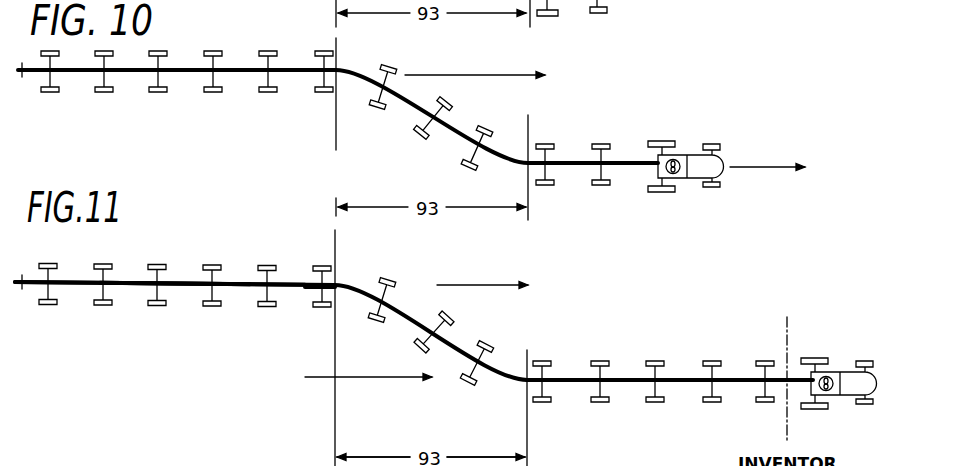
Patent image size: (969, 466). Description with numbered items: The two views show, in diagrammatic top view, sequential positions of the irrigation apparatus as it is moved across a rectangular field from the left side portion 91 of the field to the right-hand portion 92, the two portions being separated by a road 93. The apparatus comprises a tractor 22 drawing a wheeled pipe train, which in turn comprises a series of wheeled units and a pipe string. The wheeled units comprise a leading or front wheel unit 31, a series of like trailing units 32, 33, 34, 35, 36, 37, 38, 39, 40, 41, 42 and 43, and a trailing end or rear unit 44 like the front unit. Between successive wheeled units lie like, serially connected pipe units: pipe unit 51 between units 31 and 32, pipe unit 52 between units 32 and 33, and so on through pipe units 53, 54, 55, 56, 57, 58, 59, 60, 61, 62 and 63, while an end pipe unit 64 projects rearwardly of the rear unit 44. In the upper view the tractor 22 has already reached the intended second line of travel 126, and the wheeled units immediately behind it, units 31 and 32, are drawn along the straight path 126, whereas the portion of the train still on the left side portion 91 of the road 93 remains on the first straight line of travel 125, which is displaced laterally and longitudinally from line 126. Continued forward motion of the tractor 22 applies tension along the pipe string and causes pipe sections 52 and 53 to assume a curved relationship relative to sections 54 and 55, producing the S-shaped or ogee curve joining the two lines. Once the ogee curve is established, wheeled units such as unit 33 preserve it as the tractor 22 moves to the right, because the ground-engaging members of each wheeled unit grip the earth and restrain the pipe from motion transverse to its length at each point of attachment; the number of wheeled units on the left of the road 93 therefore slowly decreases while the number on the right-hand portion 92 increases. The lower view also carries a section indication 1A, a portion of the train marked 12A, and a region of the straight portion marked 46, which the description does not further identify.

In FIG. 11, the section line 1A is at (762, 442).
In FIG. 11, the track section 12A is at (746, 402).
In FIG. 11, the tractor 22 is at (850, 370).
In FIG. 10, the front wheel unit 31 is at (600, 143).
In FIG. 11, the front wheel unit 31 is at (767, 408).
In FIG. 10, the trailing wheeled unit 32 is at (547, 143).
In FIG. 11, the trailing wheeled unit 32 is at (717, 408).
In FIG. 10, the trailing wheeled unit 33 is at (488, 127).
In FIG. 11, the trailing wheeled unit 33 is at (660, 408).
In FIG. 10, the trailing wheeled unit 34 is at (448, 105).
In FIG. 11, the trailing wheeled unit 34 is at (607, 405).
In FIG. 11, the trailing wheeled unit 35 is at (545, 405).
In FIG. 11, the trailing wheeled unit 36 is at (468, 382).
In FIG. 11, the trailing wheeled unit 37 is at (419, 350).
In FIG. 11, the trailing wheeled unit 38 is at (377, 323).
In FIG. 11, the trailing wheeled unit 39 is at (325, 295).
In FIG. 11, the wheeled unit 40 is at (254, 285).
In FIG. 11, the trailing wheeled unit 41 is at (203, 287).
In FIG. 11, the trailing wheeled unit 42 is at (150, 284).
In FIG. 11, the trailing wheeled unit 43 is at (100, 305).
In FIG. 11, the rear wheeled unit 44 is at (52, 305).
In FIG. 11, the straight track section 46 is at (175, 326).
In FIG. 11, the pipe unit 51 is at (751, 380).
In FIG. 11, the pipe unit 52 is at (703, 382).
In FIG. 11, the pipe unit 53 is at (646, 387).
In FIG. 11, the pipe unit 54 is at (592, 385).
In FIG. 11, the pipe unit 55 is at (534, 385).
In FIG. 11, the pipe unit 56 is at (475, 359).
In FIG. 11, the pipe unit 57 is at (423, 319).
In FIG. 11, the pipe unit 58 is at (373, 300).
In FIG. 11, the pipe unit 59 is at (297, 282).
In FIG. 11, the wheel 60 is at (247, 288).
In FIG. 11, the pipe unit 61 is at (193, 288).
In FIG. 11, the pipe unit 62 is at (138, 287).
In FIG. 11, the pipe unit 63 is at (95, 287).
In FIG. 11, the end pipe unit 64 is at (46, 283).
In FIG. 11, the left side portion 91 is at (158, 431).
In FIG. 11, the right-hand portion 92 is at (647, 306).
In FIG. 11, the road 93 is at (431, 457).
In FIG. 10, the straight line of travel 125 is at (506, 75).
In FIG. 11, the straight line of travel 125 is at (464, 285).
In FIG. 10, the second straight line of travel 126 is at (774, 166).
In FIG. 11, the second straight line of travel 126 is at (369, 378).